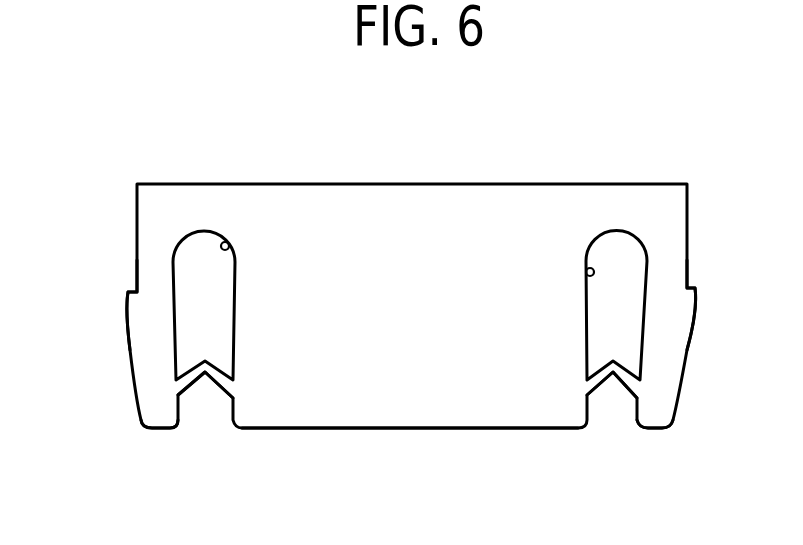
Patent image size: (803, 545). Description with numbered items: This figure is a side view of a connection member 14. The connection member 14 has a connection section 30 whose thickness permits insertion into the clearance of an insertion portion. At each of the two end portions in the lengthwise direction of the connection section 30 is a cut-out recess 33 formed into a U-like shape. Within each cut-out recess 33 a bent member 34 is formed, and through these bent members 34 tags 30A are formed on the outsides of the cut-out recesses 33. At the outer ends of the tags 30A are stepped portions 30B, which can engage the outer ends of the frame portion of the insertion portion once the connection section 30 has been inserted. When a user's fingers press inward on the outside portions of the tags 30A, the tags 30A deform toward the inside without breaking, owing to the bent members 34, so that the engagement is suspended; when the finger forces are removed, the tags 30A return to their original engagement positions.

The connection member 14 is at (380, 176).
The connection section 30 is at (468, 386).
The cut-out recess 33 is at (229, 243).
The bent member 34 is at (217, 385).
The tag 30A is at (150, 418).
The stepped portion 30B is at (130, 292).